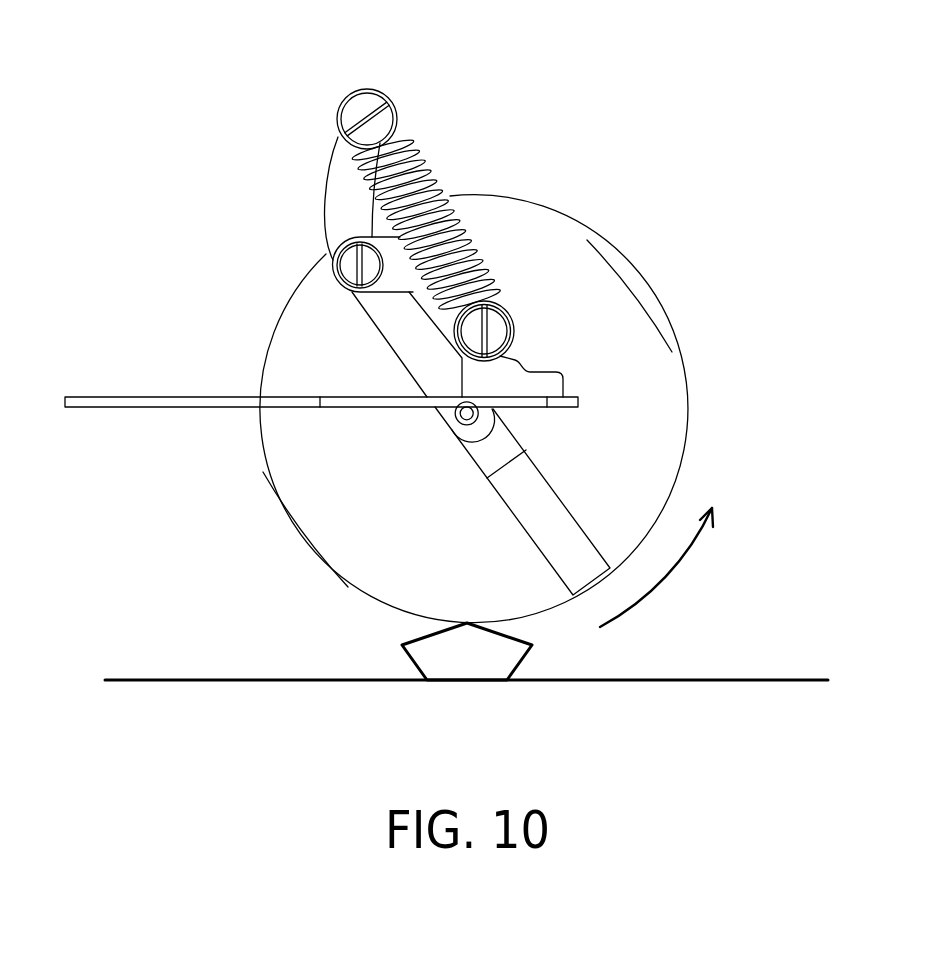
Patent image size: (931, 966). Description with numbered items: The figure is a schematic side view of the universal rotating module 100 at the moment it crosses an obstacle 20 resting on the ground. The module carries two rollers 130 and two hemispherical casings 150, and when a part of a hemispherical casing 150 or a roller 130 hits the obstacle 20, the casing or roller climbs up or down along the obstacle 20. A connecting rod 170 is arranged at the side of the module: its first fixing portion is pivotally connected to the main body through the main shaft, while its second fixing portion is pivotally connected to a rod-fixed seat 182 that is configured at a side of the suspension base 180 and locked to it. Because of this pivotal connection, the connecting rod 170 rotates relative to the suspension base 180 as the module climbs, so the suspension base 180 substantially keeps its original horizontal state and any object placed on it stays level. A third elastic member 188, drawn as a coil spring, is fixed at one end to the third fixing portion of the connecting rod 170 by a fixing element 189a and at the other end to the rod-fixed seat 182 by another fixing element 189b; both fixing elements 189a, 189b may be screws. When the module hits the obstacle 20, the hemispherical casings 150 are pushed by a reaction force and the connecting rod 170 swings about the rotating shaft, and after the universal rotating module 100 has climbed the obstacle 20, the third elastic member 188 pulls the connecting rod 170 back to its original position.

The universal rotating module 100 is at (203, 53).
The obstacle 20 is at (438, 661).
The roller 130 is at (308, 543).
The hemispherical casing 150 is at (283, 447).
The connecting rod 170 is at (340, 203).
The suspension base 180 is at (102, 398).
The rod-fixed seat 182 is at (500, 273).
The third elastic member 188 is at (418, 152).
The fixing element 189a is at (372, 102).
The fixing element 189b is at (504, 331).